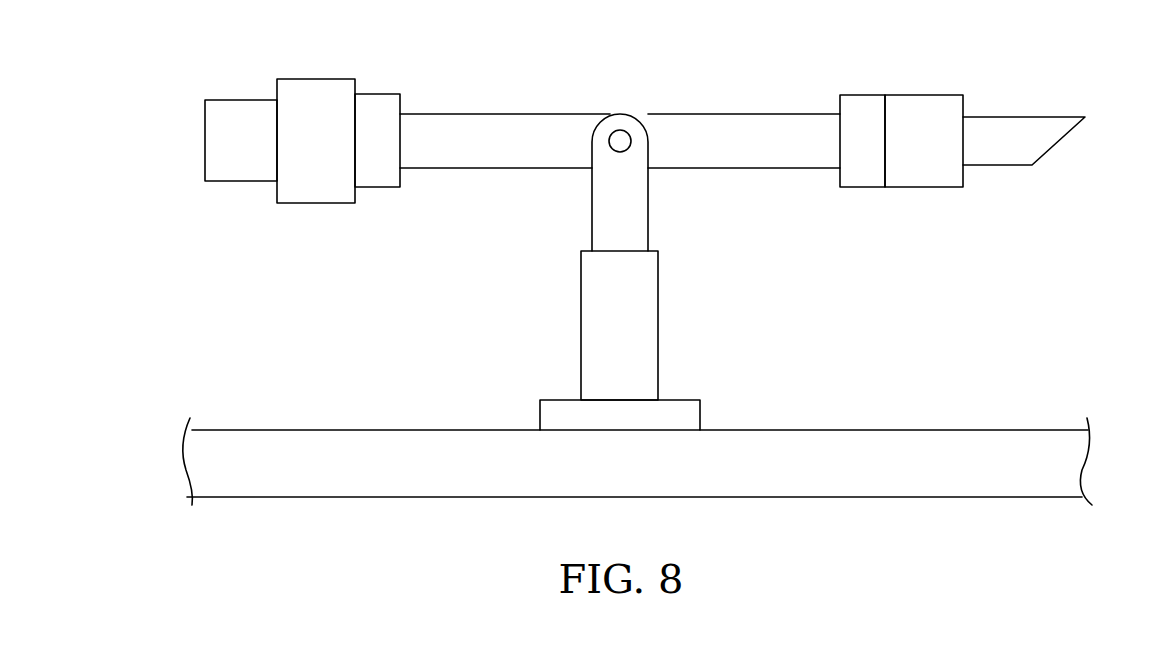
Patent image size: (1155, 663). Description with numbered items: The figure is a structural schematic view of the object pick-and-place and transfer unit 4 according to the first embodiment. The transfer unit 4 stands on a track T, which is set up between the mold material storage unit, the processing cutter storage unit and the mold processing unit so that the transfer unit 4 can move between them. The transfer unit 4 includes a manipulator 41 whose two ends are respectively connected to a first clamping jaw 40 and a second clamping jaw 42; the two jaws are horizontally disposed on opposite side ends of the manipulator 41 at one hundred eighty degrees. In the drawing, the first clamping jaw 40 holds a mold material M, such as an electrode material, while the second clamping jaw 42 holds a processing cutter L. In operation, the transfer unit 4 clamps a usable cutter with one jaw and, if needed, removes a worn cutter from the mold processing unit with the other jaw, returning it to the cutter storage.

The mold material M is at (243, 103).
The first clamping jaw 40 is at (320, 88).
The manipulator 41 is at (525, 128).
The object pick-and-place and transfer unit 4 is at (706, 108).
The second clamping jaw 42 is at (922, 105).
The processing cutter L is at (1011, 123).
The track T is at (357, 438).